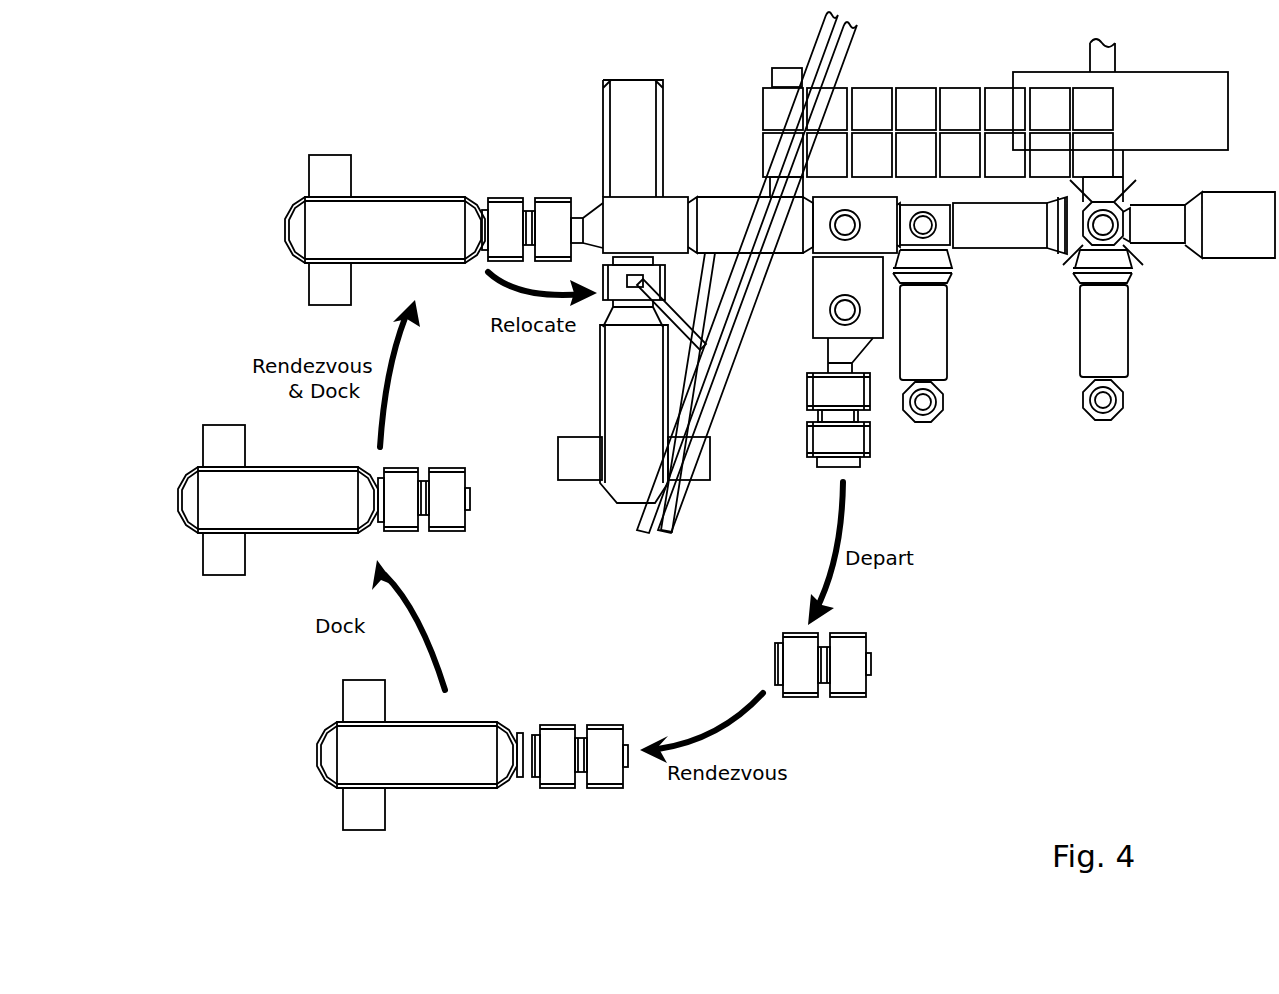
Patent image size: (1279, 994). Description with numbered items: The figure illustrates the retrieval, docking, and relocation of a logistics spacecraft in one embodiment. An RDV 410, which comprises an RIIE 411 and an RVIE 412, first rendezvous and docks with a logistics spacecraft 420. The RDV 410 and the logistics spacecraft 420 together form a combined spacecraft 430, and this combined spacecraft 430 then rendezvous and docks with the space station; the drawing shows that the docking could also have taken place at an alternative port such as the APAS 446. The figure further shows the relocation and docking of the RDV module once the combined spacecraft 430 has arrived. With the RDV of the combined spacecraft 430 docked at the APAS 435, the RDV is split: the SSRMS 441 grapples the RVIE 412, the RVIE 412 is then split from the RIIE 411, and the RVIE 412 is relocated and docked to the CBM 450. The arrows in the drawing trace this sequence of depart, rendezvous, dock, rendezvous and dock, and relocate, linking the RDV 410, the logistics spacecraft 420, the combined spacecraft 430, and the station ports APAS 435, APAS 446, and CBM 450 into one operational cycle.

The RDV 410 is at (880, 633).
The RIIE 411 is at (603, 790).
The RVIE 412 is at (555, 790).
The logistics spacecraft 420 is at (422, 790).
The combined spacecraft 430 is at (180, 425).
The APAS 435 is at (583, 213).
The SSRMS 441 is at (680, 330).
The APAS 446 is at (827, 350).
The CBM 450 is at (678, 193).